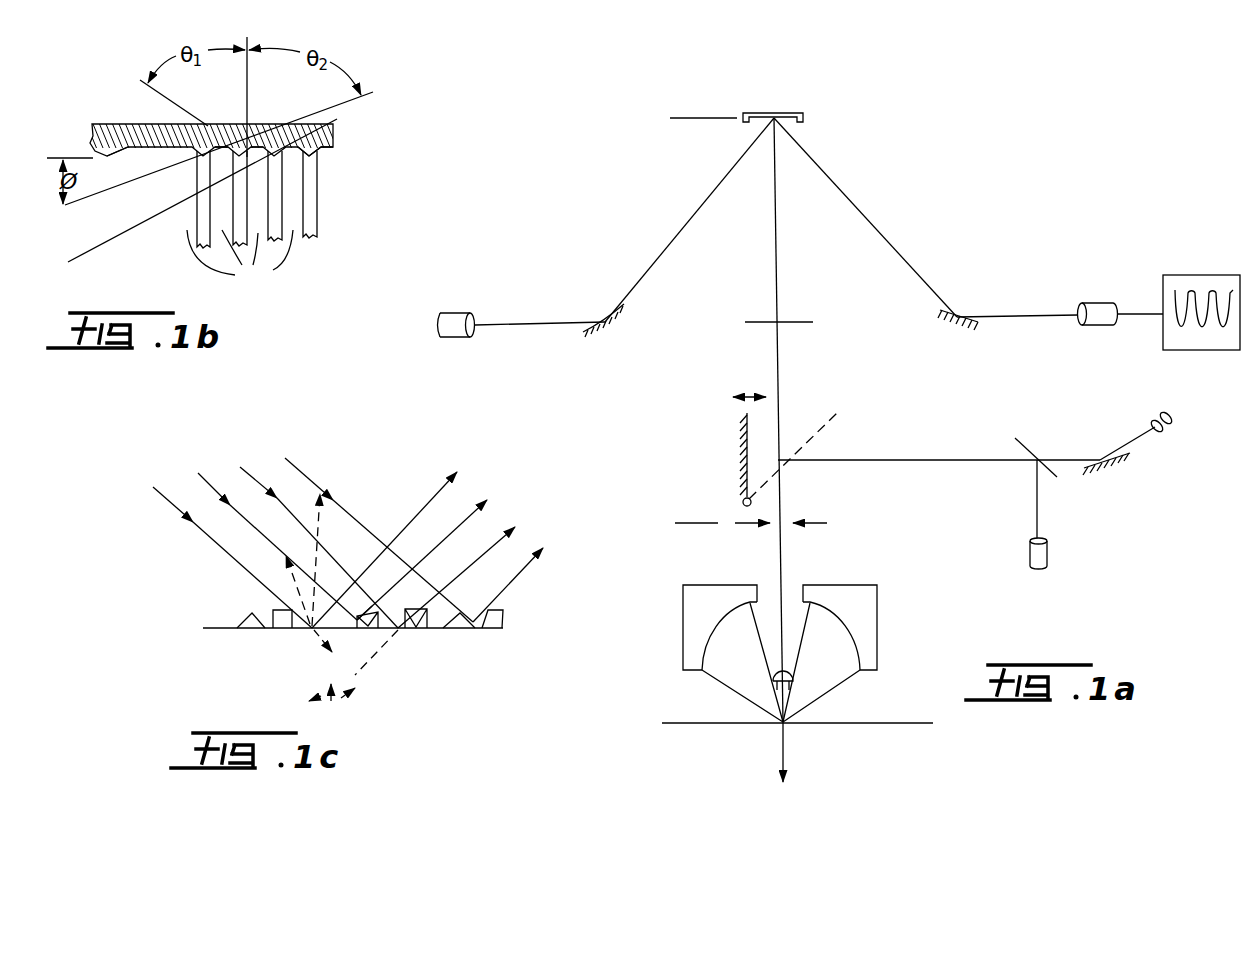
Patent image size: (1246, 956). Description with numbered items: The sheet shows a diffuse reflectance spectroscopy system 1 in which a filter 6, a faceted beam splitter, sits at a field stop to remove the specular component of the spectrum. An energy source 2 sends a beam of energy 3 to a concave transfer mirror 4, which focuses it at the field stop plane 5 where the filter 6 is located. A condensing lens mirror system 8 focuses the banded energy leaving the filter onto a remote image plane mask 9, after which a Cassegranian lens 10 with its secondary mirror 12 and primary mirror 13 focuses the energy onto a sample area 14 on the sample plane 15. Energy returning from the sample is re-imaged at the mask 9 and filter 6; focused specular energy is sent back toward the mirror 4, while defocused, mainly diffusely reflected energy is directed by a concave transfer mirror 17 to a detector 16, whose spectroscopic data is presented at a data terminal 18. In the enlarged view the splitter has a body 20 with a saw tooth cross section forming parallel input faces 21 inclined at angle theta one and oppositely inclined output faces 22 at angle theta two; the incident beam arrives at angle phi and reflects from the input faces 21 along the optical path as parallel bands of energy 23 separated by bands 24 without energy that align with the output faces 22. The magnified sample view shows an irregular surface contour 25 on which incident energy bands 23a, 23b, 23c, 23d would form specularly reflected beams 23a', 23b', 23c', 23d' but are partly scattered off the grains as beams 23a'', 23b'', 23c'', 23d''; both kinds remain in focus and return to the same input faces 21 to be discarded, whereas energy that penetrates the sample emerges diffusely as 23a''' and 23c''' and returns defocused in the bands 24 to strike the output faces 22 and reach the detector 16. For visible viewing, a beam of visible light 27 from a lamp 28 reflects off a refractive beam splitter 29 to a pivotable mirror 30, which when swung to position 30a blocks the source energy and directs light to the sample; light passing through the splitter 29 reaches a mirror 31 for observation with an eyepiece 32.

In FIG. 1a, the diffuse reflectance spectroscopy system 1 is at (870, 194).
In FIG. 1a, the energy source 2 is at (447, 312).
In FIG. 1a, the beam of energy 3 is at (538, 327).
In FIG. 1b, the beam of energy 3 is at (80, 232).
In FIG. 1a, the concave transfer mirror 4 is at (627, 310).
In FIG. 1a, the field stop plane 5 is at (694, 118).
In FIG. 1a, the filter 6 is at (765, 111).
In FIG. 1b, the filter 6 is at (152, 122).
In FIG. 1a, the condensing lens mirror system 8 is at (800, 322).
In FIG. 1a, the remote image plane mask 9 is at (820, 523).
In FIG. 1a, the Cassegranian lens 10 is at (678, 648).
In FIG. 1a, the secondary mirror 12 is at (794, 687).
In FIG. 1a, the primary mirror 13 is at (852, 637).
In FIG. 1a, the sample area 14 is at (781, 725).
In FIG. 1c, the sample area 14 is at (413, 631).
In FIG. 1a, the sample plane 15 is at (688, 720).
In FIG. 1c, the sample plane 15 is at (207, 627).
In FIG. 1a, the detector 16 is at (1106, 301).
In FIG. 1a, the concave transfer mirror 17 is at (972, 320).
In FIG. 1a, the data terminal 18 is at (1188, 275).
In FIG. 1b, the body 20 is at (281, 125).
In FIG. 1b, the input faces 21 is at (128, 124).
In FIG. 1b, the output faces 22 is at (334, 147).
In FIG. 1b, the bands of energy 23 is at (203, 193).
In FIG. 1b, the bands without energy 24 is at (240, 264).
In FIG. 1c, the irregular surface contour 25 is at (273, 613).
In FIG. 1a, the beam of visible light 27 is at (1040, 511).
In FIG. 1a, the lamp 28 is at (1049, 560).
In FIG. 1a, the refractive beam splitter 29 is at (1017, 437).
In FIG. 1a, the pivotable mirror 30 is at (742, 460).
In FIG. 1a, the dotted line position of pivotal mirror 30a is at (817, 450).
In FIG. 1a, the mirror 31 is at (1104, 470).
In FIG. 1a, the eyepiece 32 is at (1169, 430).
In FIG. 1c, the incident energy band 23a is at (218, 545).
In FIG. 1c, the incident energy band 23b is at (263, 533).
In FIG. 1c, the incident energy band 23c is at (309, 534).
In FIG. 1c, the incident energy band 23d is at (375, 525).
In FIG. 1c, the specularly reflected beam 23a' is at (400, 535).
In FIG. 1c, the specularly reflected beam 23b' is at (439, 543).
In FIG. 1c, the specularly reflected beam 23c' is at (474, 560).
In FIG. 1c, the specularly reflected beam 23d' is at (535, 572).
In FIG. 1c, the specularly scattered beam 23a'' is at (339, 542).
In FIG. 1c, the specularly scattered beam 23b'' is at (279, 562).
In FIG. 1c, the specularly scattered beam 23d'' is at (378, 555).
In FIG. 1c, the diffuse reflectance energy 23a''' is at (298, 643).
In FIG. 1c, the specularly scattered beam 23c'' is at (354, 655).
In FIG. 1c, the diffuse reflectance energy 23c''' is at (306, 688).